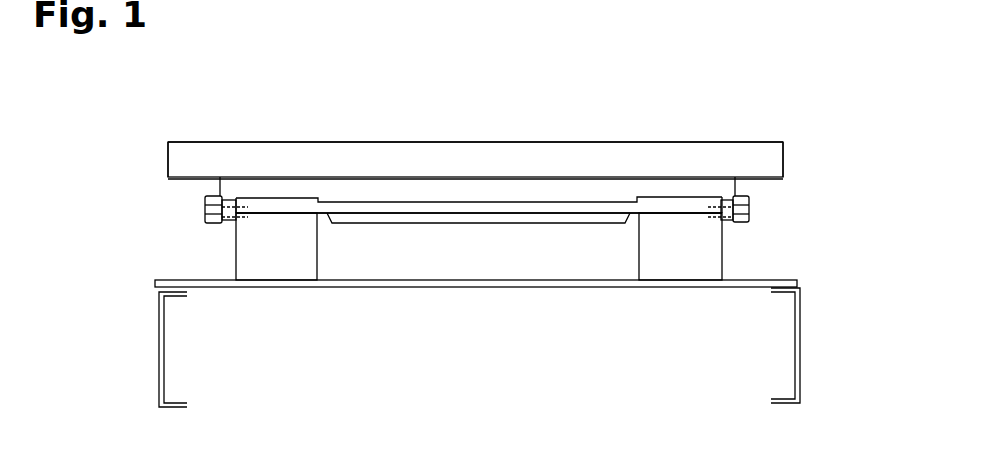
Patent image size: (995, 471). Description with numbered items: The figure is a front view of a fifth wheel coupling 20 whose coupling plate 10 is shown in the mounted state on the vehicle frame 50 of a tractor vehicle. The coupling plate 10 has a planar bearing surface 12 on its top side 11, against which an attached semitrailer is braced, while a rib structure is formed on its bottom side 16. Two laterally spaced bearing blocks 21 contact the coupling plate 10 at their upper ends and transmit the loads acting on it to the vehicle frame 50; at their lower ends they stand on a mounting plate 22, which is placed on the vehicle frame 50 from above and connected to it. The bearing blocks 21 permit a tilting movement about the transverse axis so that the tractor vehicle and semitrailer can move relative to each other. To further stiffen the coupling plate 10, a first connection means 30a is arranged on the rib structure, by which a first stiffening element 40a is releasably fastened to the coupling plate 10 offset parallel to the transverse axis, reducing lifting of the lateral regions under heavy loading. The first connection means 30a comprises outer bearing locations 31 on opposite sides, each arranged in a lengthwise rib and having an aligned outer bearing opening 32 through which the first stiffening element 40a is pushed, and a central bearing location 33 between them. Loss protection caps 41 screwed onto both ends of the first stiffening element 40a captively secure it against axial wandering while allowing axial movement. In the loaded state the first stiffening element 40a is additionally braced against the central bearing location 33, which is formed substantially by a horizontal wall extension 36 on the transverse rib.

The coupling plate 10 is at (672, 142).
The top side 11 is at (468, 142).
The bearing surface 12 is at (355, 142).
The bottom side 16 is at (175, 178).
The fifth wheel coupling 20 is at (814, 246).
The bearing blocks 21 is at (289, 266).
The mounting plate 22 is at (468, 288).
The first connection means 30a is at (188, 252).
The outer bearing locations 31 is at (229, 226).
The outer bearing openings 32 is at (205, 197).
The central bearing location 33 is at (504, 227).
The horizontal wall extension 36 is at (593, 224).
The first stiffening element 40a is at (322, 207).
The loss protection caps 41 is at (205, 222).
The vehicle frame 50 is at (164, 342).